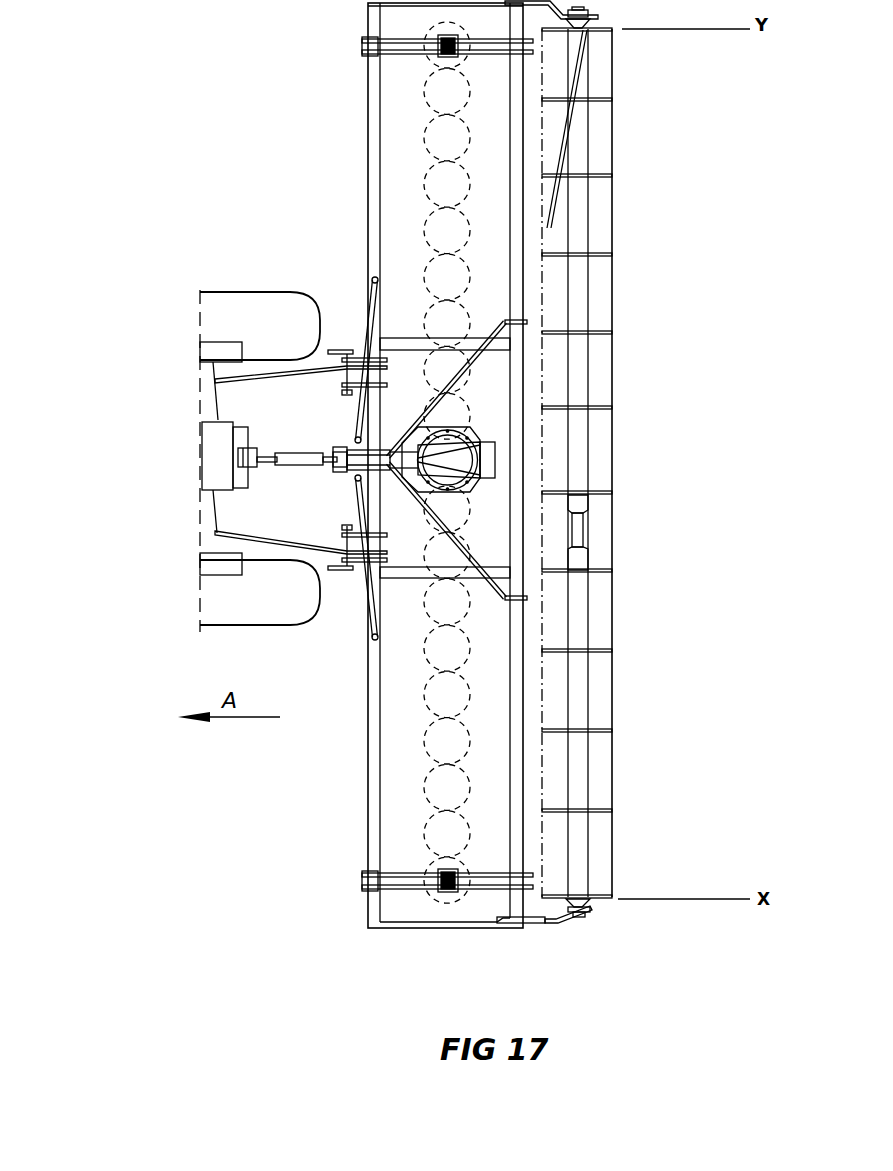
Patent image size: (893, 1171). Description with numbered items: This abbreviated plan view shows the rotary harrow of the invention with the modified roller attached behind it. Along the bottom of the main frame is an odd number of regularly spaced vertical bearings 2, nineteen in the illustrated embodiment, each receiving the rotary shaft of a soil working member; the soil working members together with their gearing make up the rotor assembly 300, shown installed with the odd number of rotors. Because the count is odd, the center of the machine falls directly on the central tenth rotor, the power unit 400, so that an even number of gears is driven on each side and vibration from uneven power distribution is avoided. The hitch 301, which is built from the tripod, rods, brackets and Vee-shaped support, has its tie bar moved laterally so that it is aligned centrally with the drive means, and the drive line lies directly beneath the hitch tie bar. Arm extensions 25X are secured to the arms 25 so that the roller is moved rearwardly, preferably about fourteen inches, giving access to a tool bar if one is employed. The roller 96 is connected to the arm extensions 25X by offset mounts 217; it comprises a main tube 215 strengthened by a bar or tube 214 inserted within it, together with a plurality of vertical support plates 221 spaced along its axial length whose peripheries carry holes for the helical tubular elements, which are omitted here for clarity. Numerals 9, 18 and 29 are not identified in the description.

The vertical bearing 2 is at (452, 845).
The disc blade 9 is at (455, 523).
The disc blade 18 is at (457, 102).
The arm 25 is at (448, 930).
The arm extension 25X is at (540, 923).
The diagonal brace 29 is at (577, 83).
The roller 96 is at (637, 182).
The strengthening bar 214 is at (590, 522).
The main tube 215 is at (590, 557).
The offset mount 217 is at (557, 918).
The vertical support plate 221 is at (590, 343).
The rotor assembly 300 is at (422, 134).
The hitch 301 is at (334, 408).
The power unit 400 is at (487, 446).